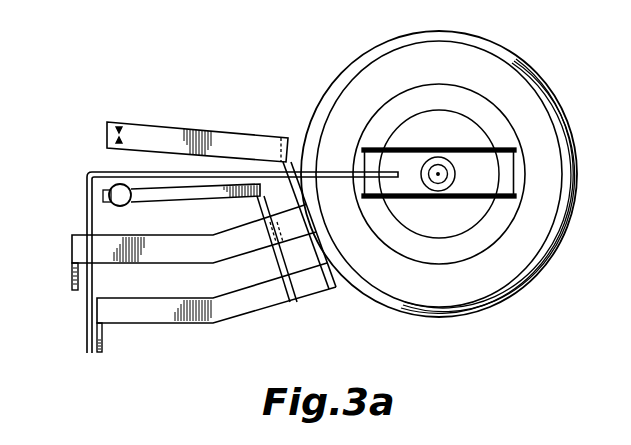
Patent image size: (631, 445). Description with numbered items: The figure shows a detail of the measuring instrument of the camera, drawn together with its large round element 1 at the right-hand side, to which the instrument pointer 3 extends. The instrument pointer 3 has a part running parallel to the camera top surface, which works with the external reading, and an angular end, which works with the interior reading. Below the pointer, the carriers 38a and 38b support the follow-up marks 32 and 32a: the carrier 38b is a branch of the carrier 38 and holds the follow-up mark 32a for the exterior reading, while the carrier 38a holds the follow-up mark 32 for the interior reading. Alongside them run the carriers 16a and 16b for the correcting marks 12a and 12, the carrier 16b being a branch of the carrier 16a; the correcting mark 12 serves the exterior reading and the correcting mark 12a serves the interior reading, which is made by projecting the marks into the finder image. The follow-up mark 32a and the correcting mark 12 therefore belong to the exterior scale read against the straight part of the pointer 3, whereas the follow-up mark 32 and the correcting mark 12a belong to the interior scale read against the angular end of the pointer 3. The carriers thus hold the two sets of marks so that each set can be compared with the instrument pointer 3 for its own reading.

The wheel 1 is at (545, 123).
The instrument pointer 3 is at (85, 174).
The correcting mark 12 is at (119, 127).
The correcting mark 12a is at (72, 285).
The carrier 16a is at (198, 254).
The carrier 16b is at (241, 140).
The follow-up mark 32 is at (100, 353).
The follow-up mark 32a is at (126, 203).
The carrier 38 is at (328, 283).
The carrier 38a is at (252, 306).
The carrier 38b is at (198, 197).